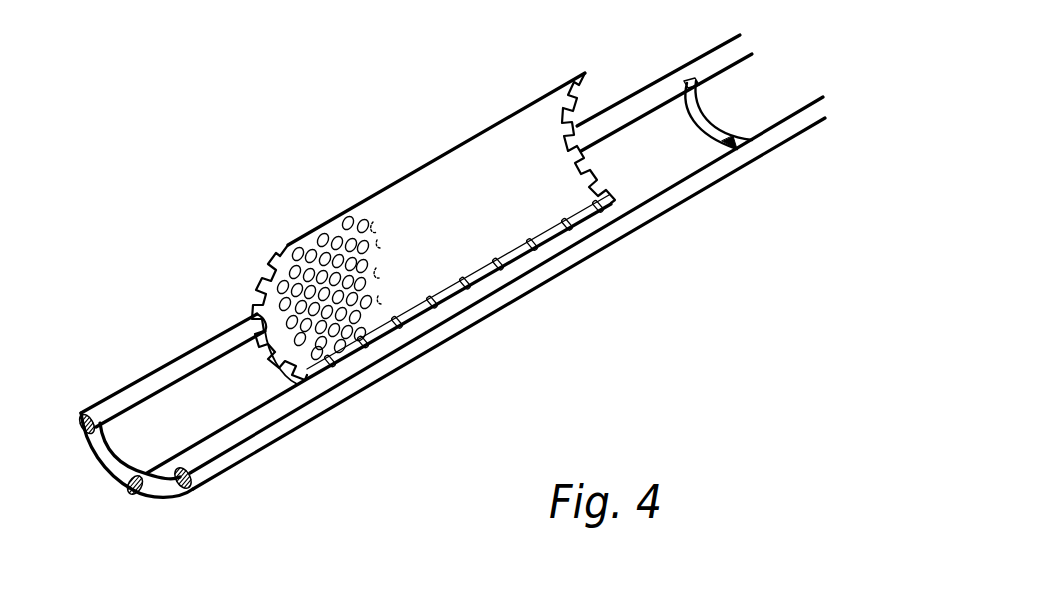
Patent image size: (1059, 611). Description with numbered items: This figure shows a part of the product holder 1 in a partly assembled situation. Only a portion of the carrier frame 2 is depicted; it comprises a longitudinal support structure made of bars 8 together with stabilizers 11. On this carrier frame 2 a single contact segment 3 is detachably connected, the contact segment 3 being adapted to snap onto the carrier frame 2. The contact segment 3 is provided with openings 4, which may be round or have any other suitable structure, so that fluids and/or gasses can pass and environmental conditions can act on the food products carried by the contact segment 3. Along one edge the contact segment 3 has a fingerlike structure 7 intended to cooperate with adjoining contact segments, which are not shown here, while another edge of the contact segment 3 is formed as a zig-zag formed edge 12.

The product holder 1 is at (237, 213).
The carrier frame 2 is at (198, 493).
The contact segment 3 is at (425, 187).
The openings 4 is at (355, 300).
The fingerlike structure 7 is at (364, 346).
The bars 8 is at (140, 396).
The stabilizers 11 is at (108, 462).
The zig-zag formed edge 12 is at (582, 104).